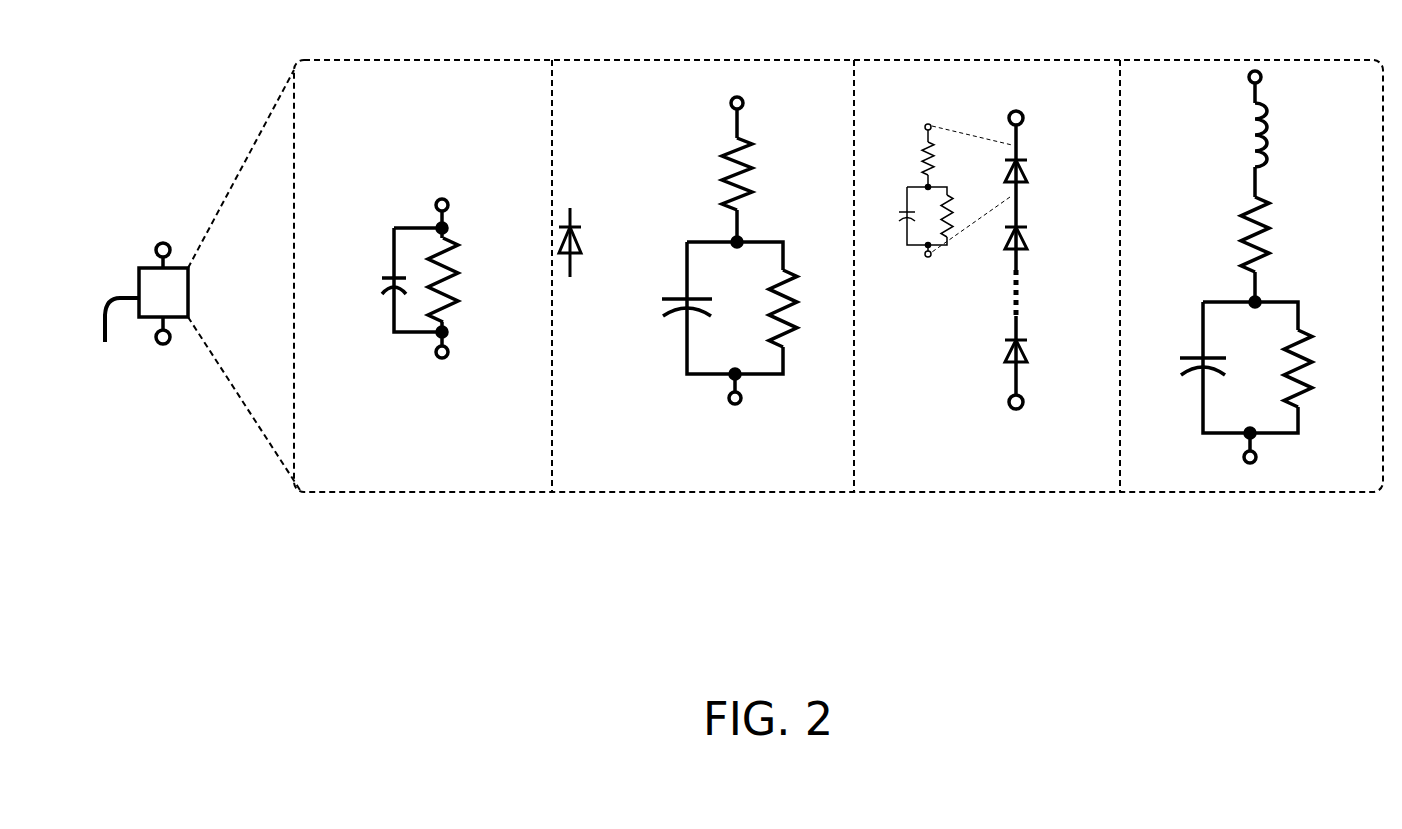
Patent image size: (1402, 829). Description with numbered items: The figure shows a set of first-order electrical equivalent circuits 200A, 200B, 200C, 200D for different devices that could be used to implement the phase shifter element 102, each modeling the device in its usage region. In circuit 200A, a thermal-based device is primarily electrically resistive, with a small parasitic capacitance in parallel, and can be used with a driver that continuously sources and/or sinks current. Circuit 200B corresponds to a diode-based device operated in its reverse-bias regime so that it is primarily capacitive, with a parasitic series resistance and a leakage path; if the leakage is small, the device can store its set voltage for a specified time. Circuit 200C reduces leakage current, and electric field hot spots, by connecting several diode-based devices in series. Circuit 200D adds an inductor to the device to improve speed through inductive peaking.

The phase shifter element 102 is at (135, 312).
The circuit 200A is at (373, 477).
The circuit 200B is at (632, 477).
The circuit 200C is at (922, 477).
The circuit 200D is at (1200, 477).